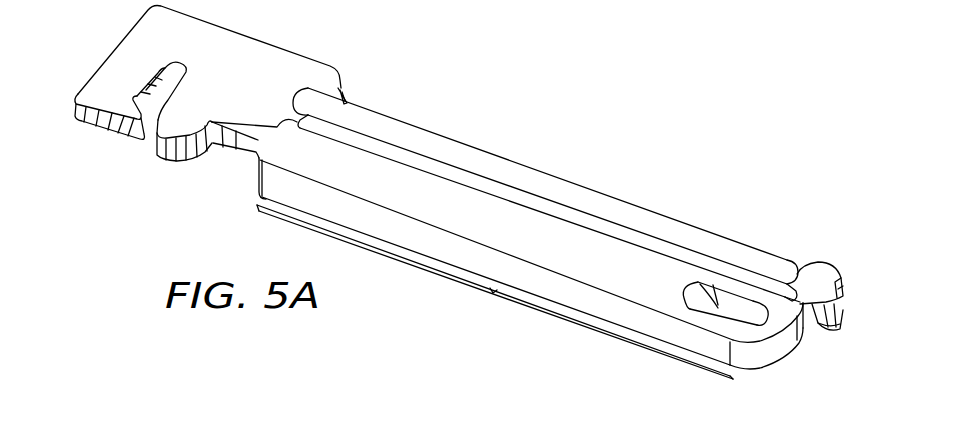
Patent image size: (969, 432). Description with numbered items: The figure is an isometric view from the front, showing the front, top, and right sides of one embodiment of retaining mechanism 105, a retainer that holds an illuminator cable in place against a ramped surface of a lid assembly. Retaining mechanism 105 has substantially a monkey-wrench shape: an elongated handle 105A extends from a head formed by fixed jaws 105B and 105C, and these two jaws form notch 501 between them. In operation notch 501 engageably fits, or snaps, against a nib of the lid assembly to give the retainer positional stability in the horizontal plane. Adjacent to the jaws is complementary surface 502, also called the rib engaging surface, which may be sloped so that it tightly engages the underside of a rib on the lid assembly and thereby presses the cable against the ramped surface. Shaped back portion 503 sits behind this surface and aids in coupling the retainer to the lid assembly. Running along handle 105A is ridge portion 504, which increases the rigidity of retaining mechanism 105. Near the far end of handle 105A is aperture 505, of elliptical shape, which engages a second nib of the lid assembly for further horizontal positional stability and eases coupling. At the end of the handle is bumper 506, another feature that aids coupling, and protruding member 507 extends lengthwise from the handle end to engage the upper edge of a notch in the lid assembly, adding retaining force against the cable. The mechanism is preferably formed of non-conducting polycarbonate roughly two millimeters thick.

The retaining mechanism 105 is at (539, 121).
The elongated handle 105A is at (493, 293).
The fixed jaw 105B is at (102, 101).
The fixed jaw 105C is at (184, 128).
The notch 501 is at (146, 148).
The complementary surface 502 is at (270, 116).
The shaped back portion 503 is at (348, 89).
The ridge portion 504 is at (603, 230).
The aperture 505 is at (730, 310).
The bumper 506 is at (833, 268).
The protruding member 507 is at (838, 333).